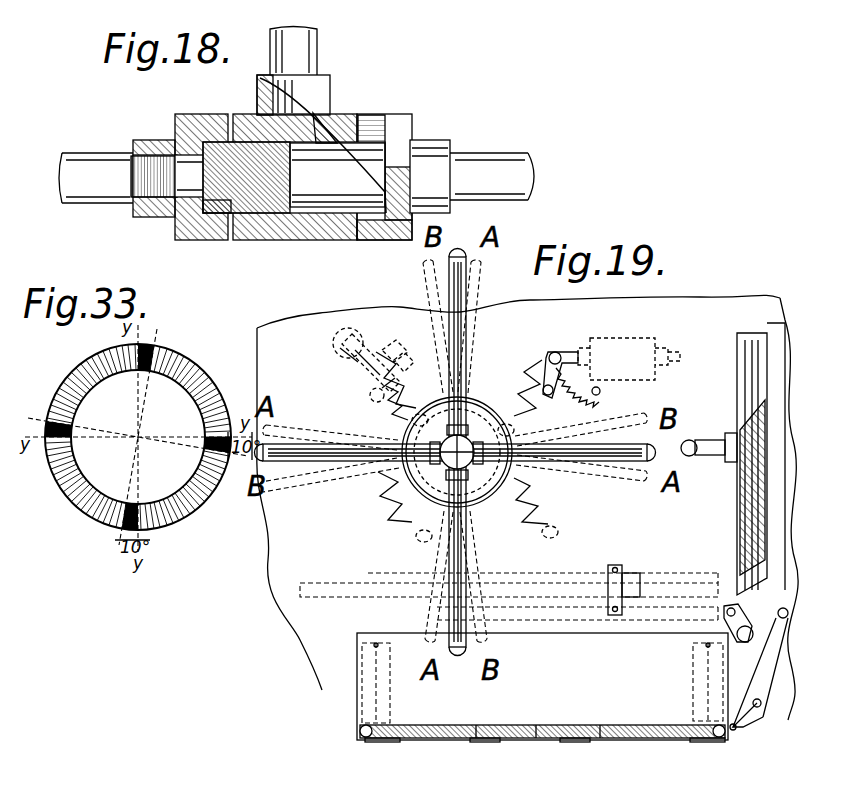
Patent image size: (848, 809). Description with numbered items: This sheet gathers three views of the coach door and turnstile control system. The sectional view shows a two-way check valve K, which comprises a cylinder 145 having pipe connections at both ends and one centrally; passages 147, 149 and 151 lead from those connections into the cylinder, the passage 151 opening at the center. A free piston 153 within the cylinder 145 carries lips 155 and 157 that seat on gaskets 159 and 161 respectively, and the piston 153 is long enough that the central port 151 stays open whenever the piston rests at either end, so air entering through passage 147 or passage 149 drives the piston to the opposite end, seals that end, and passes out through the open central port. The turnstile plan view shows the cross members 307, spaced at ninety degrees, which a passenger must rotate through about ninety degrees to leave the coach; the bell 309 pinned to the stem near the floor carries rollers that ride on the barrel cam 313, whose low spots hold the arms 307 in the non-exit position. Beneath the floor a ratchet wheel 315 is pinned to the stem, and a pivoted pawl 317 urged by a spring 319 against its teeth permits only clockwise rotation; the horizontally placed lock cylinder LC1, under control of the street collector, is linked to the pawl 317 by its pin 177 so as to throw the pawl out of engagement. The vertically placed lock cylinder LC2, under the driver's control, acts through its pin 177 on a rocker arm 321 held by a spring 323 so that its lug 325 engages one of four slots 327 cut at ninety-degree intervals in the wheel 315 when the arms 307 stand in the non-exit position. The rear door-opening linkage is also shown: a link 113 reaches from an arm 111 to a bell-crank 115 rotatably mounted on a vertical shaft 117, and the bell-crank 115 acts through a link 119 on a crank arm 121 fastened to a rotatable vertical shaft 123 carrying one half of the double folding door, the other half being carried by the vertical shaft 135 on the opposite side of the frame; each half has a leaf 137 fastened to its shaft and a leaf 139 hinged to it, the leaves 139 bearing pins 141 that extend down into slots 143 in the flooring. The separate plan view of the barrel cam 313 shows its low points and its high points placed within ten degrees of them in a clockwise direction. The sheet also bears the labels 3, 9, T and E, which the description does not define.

In FIG. 18, the cylinder 145 is at (258, 233).
In FIG. 18, the passage 147 is at (434, 143).
In FIG. 18, the passage 149 is at (176, 141).
In FIG. 18, the central passage 151 is at (270, 101).
In FIG. 18, the free piston 153 is at (266, 182).
In FIG. 18, the lip 155 is at (218, 127).
In FIG. 18, the lip 157 is at (298, 230).
In FIG. 18, the gasket 159 is at (181, 217).
In FIG. 18, the gasket 161 is at (372, 225).
In FIG. 18, the check valve K is at (340, 110).
In FIG. 19, the control unit 3 is at (756, 281).
In FIG. 19, the frame 9 is at (660, 741).
In FIG. 19, the arm 111 is at (512, 617).
In FIG. 19, the link 113 is at (625, 622).
In FIG. 19, the bell-crank 115 is at (775, 615).
In FIG. 19, the vertical shaft 117 is at (730, 642).
In FIG. 19, the link 119 is at (771, 668).
In FIG. 19, the crank arm 121 is at (737, 735).
In FIG. 19, the rotatable vertical shaft 123 is at (735, 746).
In FIG. 19, the vertical shaft 135 is at (360, 731).
In FIG. 19, the leaf 137 is at (415, 741).
In FIG. 19, the leaf 139 is at (490, 741).
In FIG. 19, the pin 141 is at (533, 725).
In FIG. 19, the slot 143 is at (470, 726).
In FIG. 19, the pin 177 is at (345, 343).
In FIG. 19, the cross member 307 is at (463, 341).
In FIG. 19, the bell 309 is at (425, 505).
In FIG. 33, the barrel cam 313 is at (192, 507).
In FIG. 19, the barrel cam 313 is at (501, 518).
In FIG. 19, the ratchet wheel 315 is at (478, 375).
In FIG. 19, the pivoted pawl 317 is at (550, 349).
In FIG. 19, the spring 319 is at (588, 395).
In FIG. 19, the rocker arm 321 is at (362, 363).
In FIG. 19, the spring 323 is at (370, 397).
In FIG. 19, the lug 325 is at (385, 405).
In FIG. 19, the slot 327 is at (454, 437).
In FIG. 19, the lock cylinder LC1 is at (625, 355).
In FIG. 19, the lock cylinder LC2 is at (349, 328).
In FIG. 19, the direction arrow T is at (354, 516).
In FIG. 19, the electric unit E is at (548, 578).